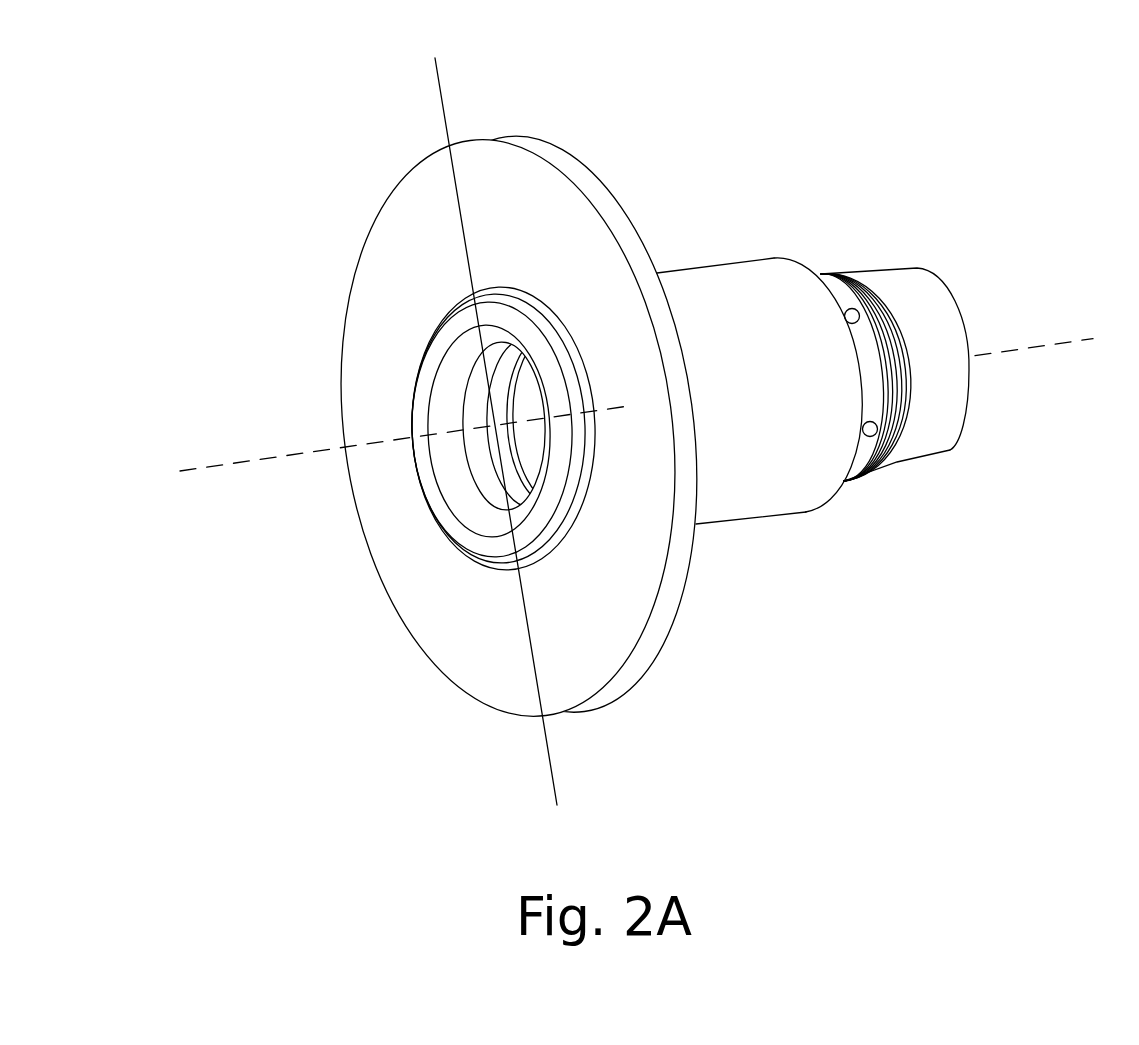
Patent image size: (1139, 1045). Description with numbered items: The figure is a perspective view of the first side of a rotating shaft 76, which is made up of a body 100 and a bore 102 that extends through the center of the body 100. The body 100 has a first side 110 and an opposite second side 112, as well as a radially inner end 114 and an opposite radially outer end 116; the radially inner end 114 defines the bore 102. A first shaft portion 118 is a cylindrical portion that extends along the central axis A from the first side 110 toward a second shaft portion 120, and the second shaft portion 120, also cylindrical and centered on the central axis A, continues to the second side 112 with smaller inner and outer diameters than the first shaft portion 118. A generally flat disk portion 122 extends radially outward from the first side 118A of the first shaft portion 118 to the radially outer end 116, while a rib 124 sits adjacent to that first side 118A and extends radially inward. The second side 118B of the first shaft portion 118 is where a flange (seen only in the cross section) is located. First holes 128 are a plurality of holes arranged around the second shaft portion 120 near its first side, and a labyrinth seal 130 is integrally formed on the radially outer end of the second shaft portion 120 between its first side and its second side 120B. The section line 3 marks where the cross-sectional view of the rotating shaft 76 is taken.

The rotating shaft 76 is at (663, 383).
The section line 3- 3 is at (438, 68).
The radially outer end 116 is at (487, 125).
The bore 102 is at (524, 387).
The body 100 is at (802, 389).
The labyrinth seal 130 is at (867, 292).
The second side 112 is at (972, 358).
The central axis A is at (645, 376).
The rib 124 is at (472, 398).
The second shaft portion 120 is at (972, 374).
The second side of second shaft portion 120B is at (958, 434).
The first holes 128 is at (893, 467).
The radially inner end 114 is at (482, 518).
The second side of first shaft portion 118B is at (853, 480).
The first shaft portion 118 is at (768, 485).
The first side 110 is at (481, 383).
The first side of first shaft portion 118A is at (462, 537).
The disk portion 122 is at (607, 635).